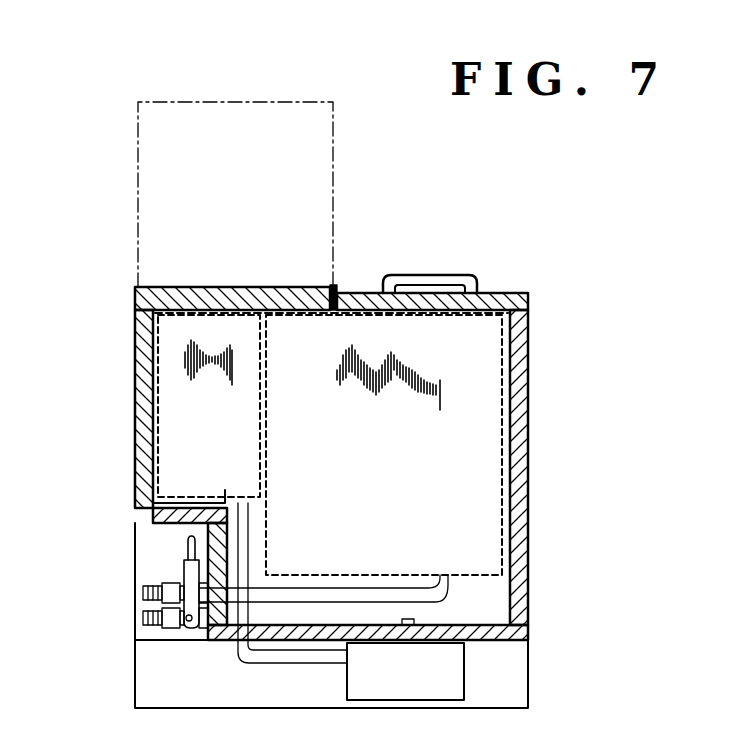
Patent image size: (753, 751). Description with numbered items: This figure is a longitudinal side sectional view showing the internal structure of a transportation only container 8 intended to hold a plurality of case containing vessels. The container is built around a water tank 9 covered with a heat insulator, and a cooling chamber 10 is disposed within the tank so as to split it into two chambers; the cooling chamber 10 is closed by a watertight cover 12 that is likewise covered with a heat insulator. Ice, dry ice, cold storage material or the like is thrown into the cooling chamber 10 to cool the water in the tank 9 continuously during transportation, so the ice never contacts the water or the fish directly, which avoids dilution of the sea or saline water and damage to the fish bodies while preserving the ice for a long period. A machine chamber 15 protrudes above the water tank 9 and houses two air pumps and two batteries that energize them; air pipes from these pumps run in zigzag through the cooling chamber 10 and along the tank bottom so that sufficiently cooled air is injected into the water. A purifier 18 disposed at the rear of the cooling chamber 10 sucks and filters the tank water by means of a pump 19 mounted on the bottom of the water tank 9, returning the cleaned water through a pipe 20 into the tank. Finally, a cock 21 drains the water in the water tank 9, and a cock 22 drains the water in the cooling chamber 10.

The transportation only container 8 is at (548, 312).
The water tank 9 is at (516, 458).
The cooling chamber 10 is at (488, 405).
The watertight cover 12 is at (498, 294).
The machine chamber 15 is at (138, 160).
The purifier 18 is at (168, 388).
The pump 19 is at (455, 668).
The pipe 20 is at (410, 619).
The cock 21 is at (170, 632).
The cock 22 is at (173, 586).